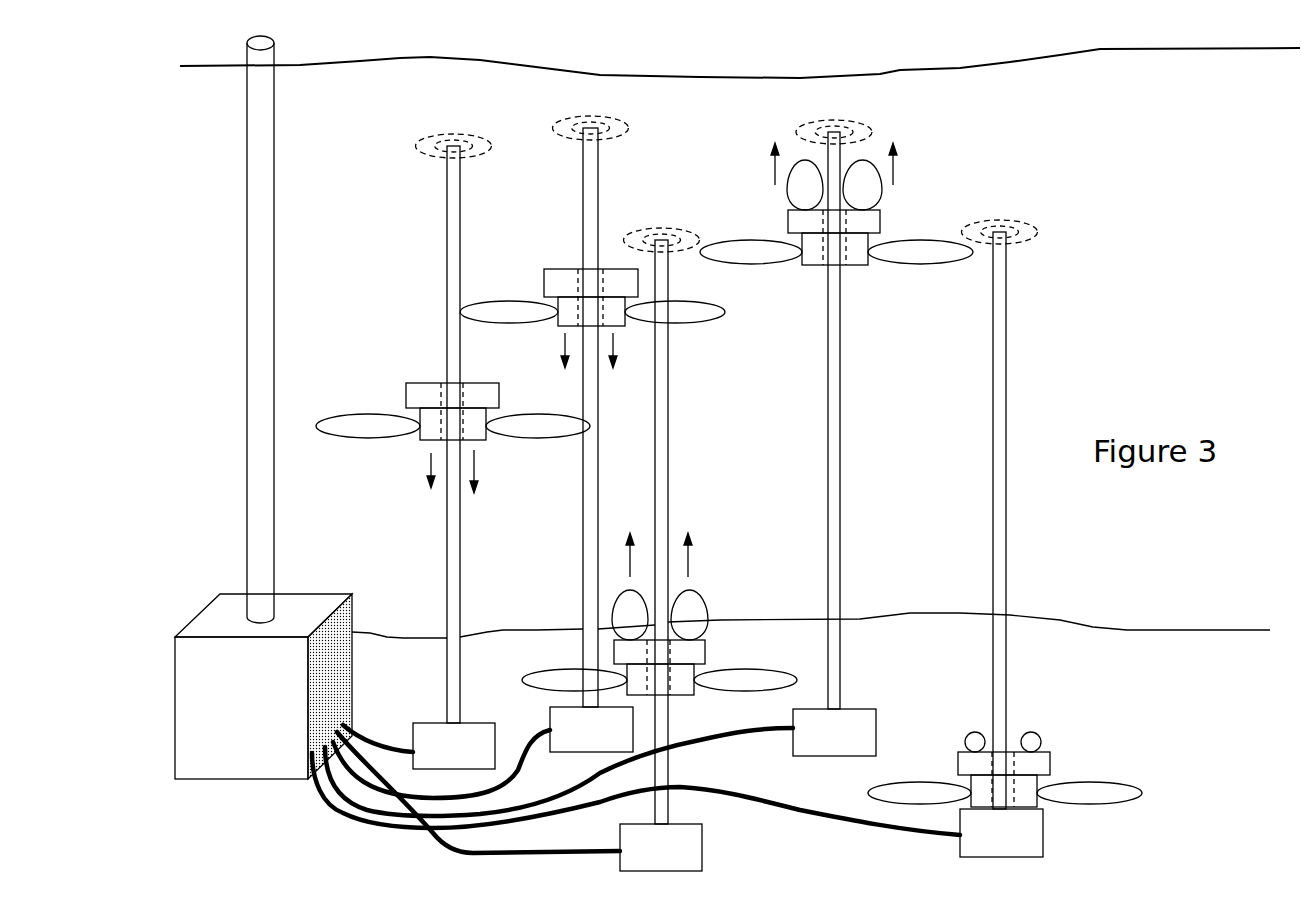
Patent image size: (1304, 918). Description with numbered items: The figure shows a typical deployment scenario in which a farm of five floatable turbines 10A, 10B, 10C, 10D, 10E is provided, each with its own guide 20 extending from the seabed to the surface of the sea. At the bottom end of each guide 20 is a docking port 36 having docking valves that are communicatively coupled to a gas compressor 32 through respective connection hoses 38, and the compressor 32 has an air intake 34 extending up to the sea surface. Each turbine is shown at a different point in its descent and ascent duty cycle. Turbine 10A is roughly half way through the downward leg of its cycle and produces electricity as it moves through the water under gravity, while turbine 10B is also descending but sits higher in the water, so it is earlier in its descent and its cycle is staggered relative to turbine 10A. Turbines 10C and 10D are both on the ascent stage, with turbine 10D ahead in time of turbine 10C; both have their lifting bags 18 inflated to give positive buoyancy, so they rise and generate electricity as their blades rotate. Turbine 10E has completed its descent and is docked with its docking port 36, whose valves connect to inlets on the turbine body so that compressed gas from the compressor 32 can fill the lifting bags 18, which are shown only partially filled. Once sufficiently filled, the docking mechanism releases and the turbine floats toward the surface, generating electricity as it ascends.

The floatable turbine 10A is at (424, 395).
The floatable turbine 10B is at (562, 277).
The floatable turbine 10C is at (725, 593).
The floatable turbine 10D is at (862, 256).
The floatable turbine 10E is at (1060, 765).
The lifting bag 18 is at (872, 183).
The guide 20 is at (450, 270).
The gas compressor 32 is at (231, 714).
The air intake 34 is at (255, 425).
The docking port 36 is at (442, 757).
The connection hose 38 is at (440, 838).